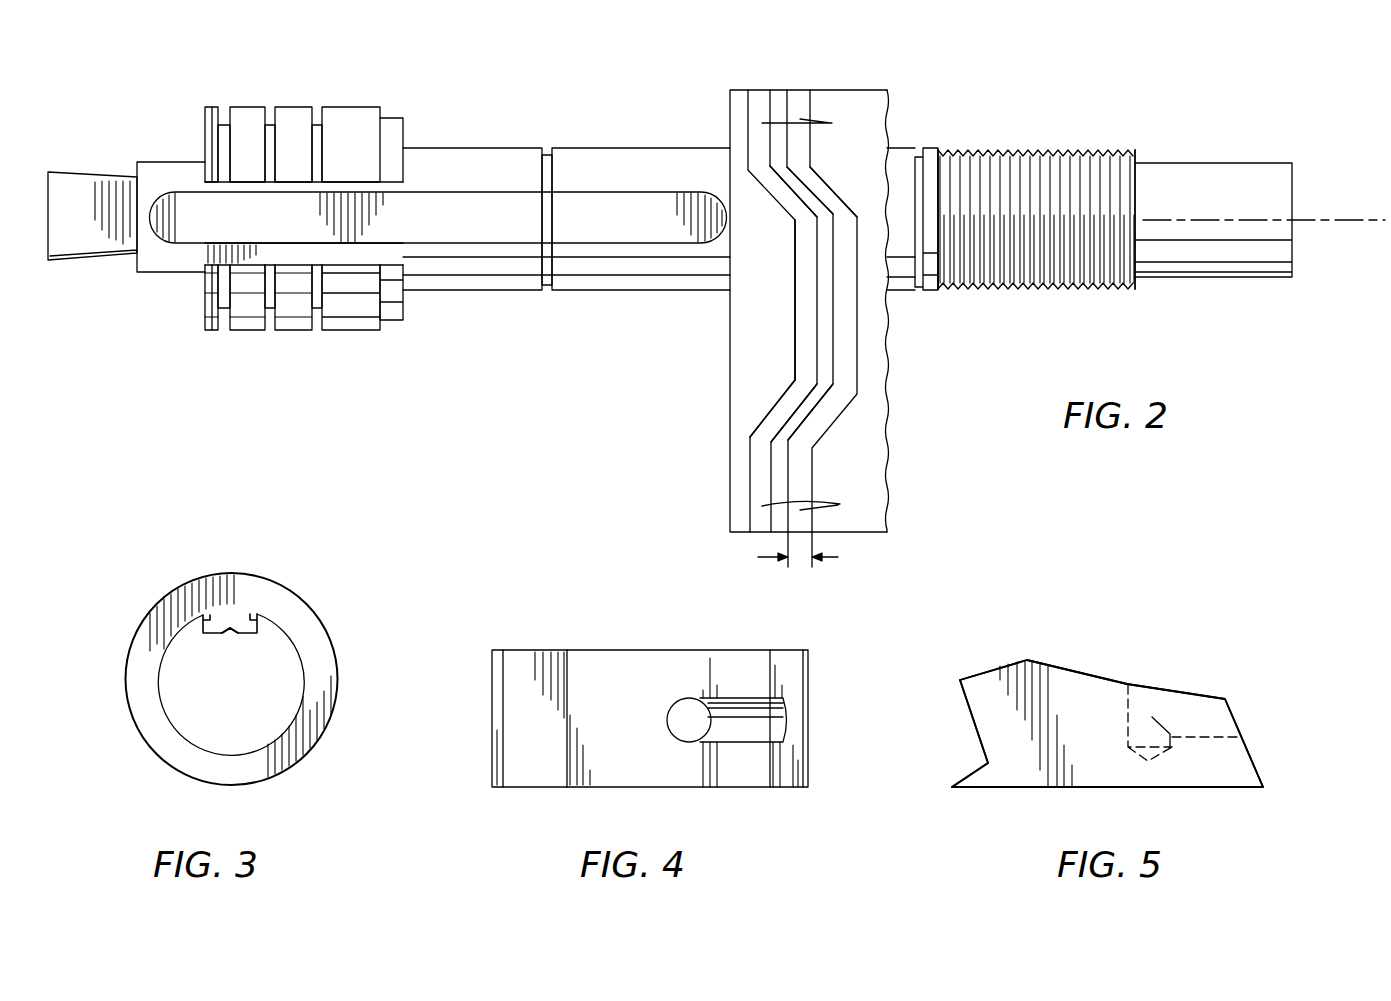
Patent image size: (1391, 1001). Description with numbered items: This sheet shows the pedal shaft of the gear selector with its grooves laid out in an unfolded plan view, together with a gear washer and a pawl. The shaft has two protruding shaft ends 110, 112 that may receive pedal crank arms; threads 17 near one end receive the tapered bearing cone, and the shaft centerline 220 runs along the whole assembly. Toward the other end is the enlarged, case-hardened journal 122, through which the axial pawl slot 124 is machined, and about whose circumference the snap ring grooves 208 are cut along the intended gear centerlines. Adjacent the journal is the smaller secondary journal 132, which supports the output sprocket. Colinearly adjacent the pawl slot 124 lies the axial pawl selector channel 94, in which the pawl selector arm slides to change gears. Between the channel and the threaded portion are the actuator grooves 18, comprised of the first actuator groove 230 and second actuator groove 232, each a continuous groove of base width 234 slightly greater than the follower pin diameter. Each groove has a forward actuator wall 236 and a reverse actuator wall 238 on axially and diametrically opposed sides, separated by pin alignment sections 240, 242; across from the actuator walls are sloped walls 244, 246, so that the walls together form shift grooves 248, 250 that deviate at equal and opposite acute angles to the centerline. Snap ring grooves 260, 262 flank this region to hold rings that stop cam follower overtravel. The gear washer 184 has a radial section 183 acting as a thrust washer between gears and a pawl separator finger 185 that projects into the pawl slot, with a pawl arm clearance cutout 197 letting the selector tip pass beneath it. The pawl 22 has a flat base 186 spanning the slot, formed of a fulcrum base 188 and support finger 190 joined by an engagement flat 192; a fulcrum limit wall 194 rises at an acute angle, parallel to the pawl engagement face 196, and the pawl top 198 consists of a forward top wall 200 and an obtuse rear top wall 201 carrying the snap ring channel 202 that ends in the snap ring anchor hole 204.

In FIG. 2, the shaft end 112 is at (97, 168).
In FIG. 2, the pawl slot 124 is at (205, 183).
In FIG. 2, the snap ring grooves 208 is at (318, 112).
In FIG. 2, the journal 122 is at (377, 107).
In FIG. 2, the secondary journal 132 is at (407, 118).
In FIG. 2, the snap ring groove 260 is at (548, 148).
In FIG. 2, the pawl selector channel 94 is at (645, 203).
In FIG. 2, the actuator grooves 18 is at (858, 435).
In FIG. 2, the second actuator groove 232 is at (758, 97).
In FIG. 2, the first actuator groove 230 is at (800, 98).
In FIG. 2, the pin alignment section 242 is at (819, 314).
In FIG. 2, the sloped wall 244 is at (772, 194).
In FIG. 2, the shift groove 248 is at (806, 202).
In FIG. 2, the forward actuator wall 236 is at (826, 215).
In FIG. 2, the pin alignment section 240 is at (842, 283).
In FIG. 2, the sloped wall 246 is at (816, 402).
In FIG. 2, the shift groove 250 is at (802, 412).
In FIG. 2, the reverse actuator wall 238 is at (775, 417).
In FIG. 2, the base width 234 is at (817, 549).
In FIG. 2, the snap ring groove 262 is at (918, 148).
In FIG. 2, the threads 17 is at (1050, 148).
In FIG. 2, the shaft end 110 is at (1195, 163).
In FIG. 2, the centerline 220 is at (1323, 222).
In FIG. 3, the gear washer 184 is at (318, 640).
In FIG. 3, the radial section 183 is at (287, 607).
In FIG. 3, the pawl separator finger 185 is at (238, 612).
In FIG. 3, the pawl arm clearance cutout 197 is at (228, 632).
In FIG. 4, the pawl 22 is at (643, 658).
In FIG. 5, the pawl 22 is at (1147, 665).
In FIG. 4, the snap ring anchor hole 204 is at (687, 710).
In FIG. 4, the snap ring channel 202 is at (778, 725).
In FIG. 5, the forward top wall 200 is at (982, 682).
In FIG. 5, the pawl top 198 is at (1075, 668).
In FIG. 5, the rear top wall 201 is at (1182, 690).
In FIG. 5, the pawl engagement face 196 is at (978, 727).
In FIG. 5, the fulcrum limit wall 194 is at (1250, 757).
In FIG. 5, the support finger 190 is at (978, 788).
In FIG. 5, the engagement flat 192 is at (1128, 792).
In FIG. 5, the flat base 186 is at (1150, 790).
In FIG. 5, the fulcrum base 188 is at (1232, 790).